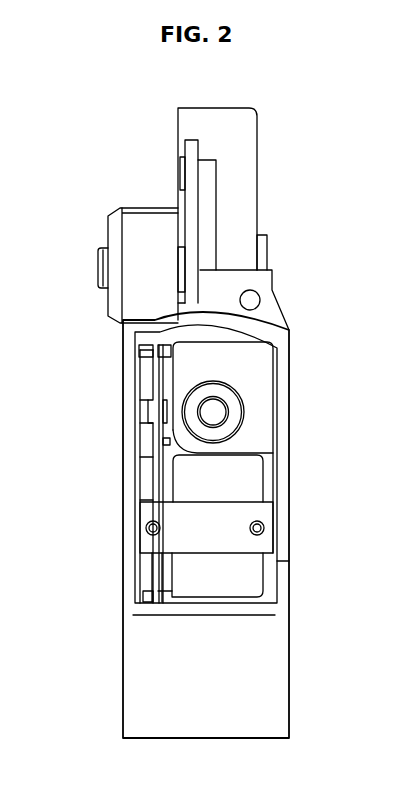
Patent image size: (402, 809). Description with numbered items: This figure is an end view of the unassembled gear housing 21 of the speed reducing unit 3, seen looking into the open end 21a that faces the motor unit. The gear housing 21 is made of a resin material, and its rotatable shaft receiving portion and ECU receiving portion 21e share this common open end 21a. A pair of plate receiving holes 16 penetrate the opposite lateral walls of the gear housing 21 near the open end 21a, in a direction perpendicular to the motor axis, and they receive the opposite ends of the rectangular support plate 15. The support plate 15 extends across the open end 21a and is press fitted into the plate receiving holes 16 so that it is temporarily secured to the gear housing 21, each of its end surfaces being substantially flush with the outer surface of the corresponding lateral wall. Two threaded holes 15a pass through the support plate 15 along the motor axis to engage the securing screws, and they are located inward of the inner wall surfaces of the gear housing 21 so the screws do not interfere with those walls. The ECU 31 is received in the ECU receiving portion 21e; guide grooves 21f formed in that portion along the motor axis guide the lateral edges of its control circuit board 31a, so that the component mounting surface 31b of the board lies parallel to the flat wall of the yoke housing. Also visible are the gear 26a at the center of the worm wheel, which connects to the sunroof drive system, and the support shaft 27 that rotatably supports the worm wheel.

The speed reducing unit 3 is at (260, 128).
The gear 26a is at (116, 208).
The support shaft 27 is at (98, 270).
The gear housing 21 is at (290, 643).
The open end 21a is at (270, 384).
The ECU receiving portion 21e is at (143, 571).
The guide grooves 21f is at (152, 352).
The ECU 31 is at (152, 456).
The control circuit board 31a is at (154, 483).
The component mounting surface 31b is at (172, 484).
The support plate 15 is at (243, 549).
The threaded holes 15a is at (146, 528).
The plate receiving holes 16 is at (125, 510).